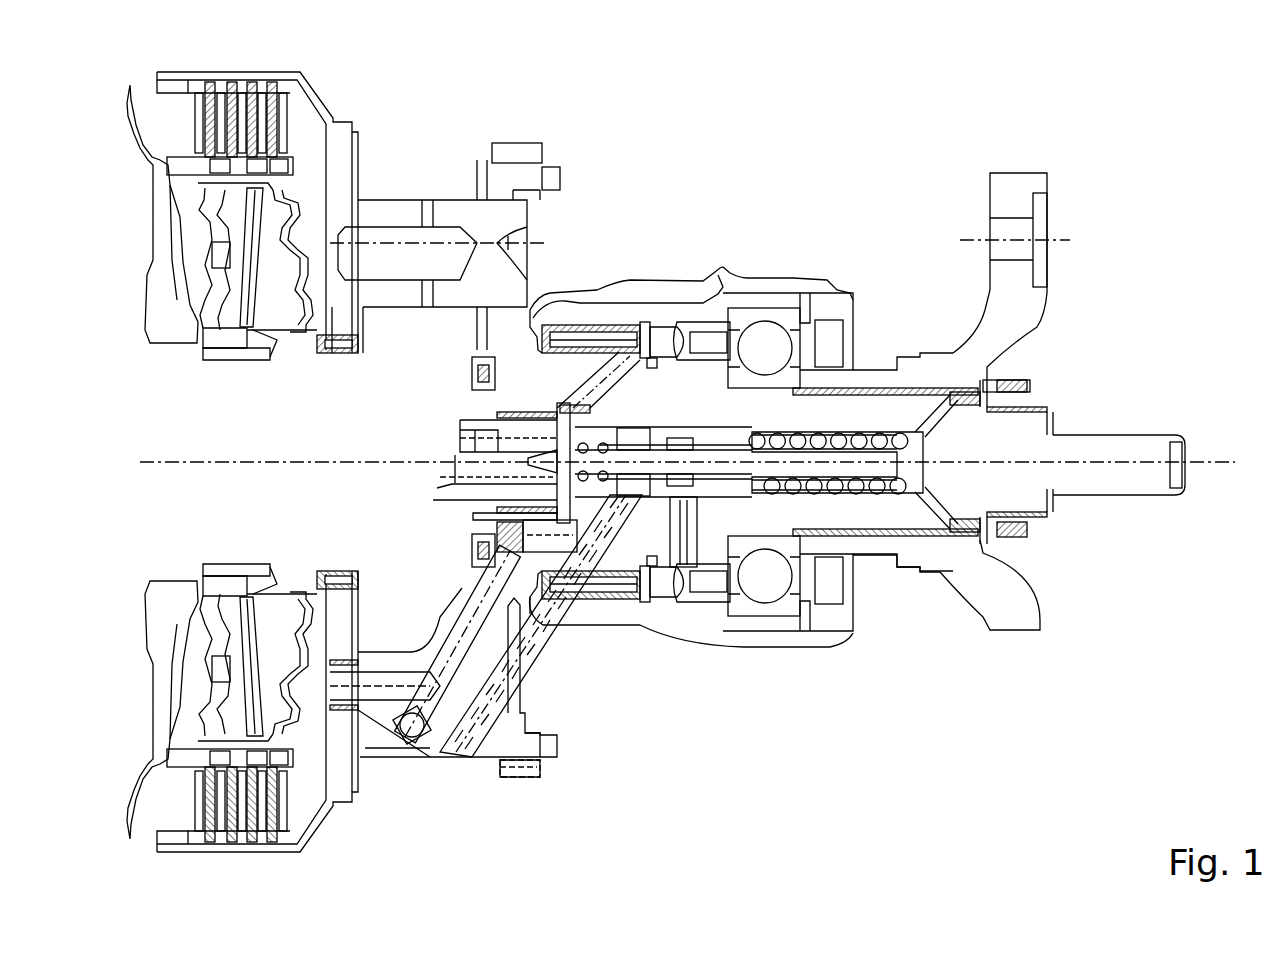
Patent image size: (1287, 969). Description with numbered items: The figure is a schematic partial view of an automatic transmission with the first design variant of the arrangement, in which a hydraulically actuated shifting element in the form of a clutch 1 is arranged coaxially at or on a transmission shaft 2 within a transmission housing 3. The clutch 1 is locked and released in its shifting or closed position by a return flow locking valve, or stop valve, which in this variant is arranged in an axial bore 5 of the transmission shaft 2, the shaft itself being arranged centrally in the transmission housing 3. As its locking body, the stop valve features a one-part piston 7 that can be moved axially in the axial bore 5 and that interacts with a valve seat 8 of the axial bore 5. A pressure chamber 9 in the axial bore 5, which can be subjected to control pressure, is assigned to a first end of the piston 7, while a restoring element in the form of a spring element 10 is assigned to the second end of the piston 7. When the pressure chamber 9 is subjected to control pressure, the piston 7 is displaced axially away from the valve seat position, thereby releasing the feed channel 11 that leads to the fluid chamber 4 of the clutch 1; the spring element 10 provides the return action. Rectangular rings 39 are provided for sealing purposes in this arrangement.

The clutch 1 is at (380, 722).
The transmission shaft 2 is at (1097, 447).
The transmission housing 3 is at (717, 270).
The fluid chamber 4 is at (493, 583).
The axial bore 5 is at (870, 428).
The piston 7 is at (760, 500).
The valve seat 8 is at (746, 300).
The pressure chamber 9 is at (567, 398).
The spring element 10 is at (823, 490).
The feed channel 11 is at (605, 610).
The rectangular rings 39 is at (700, 548).